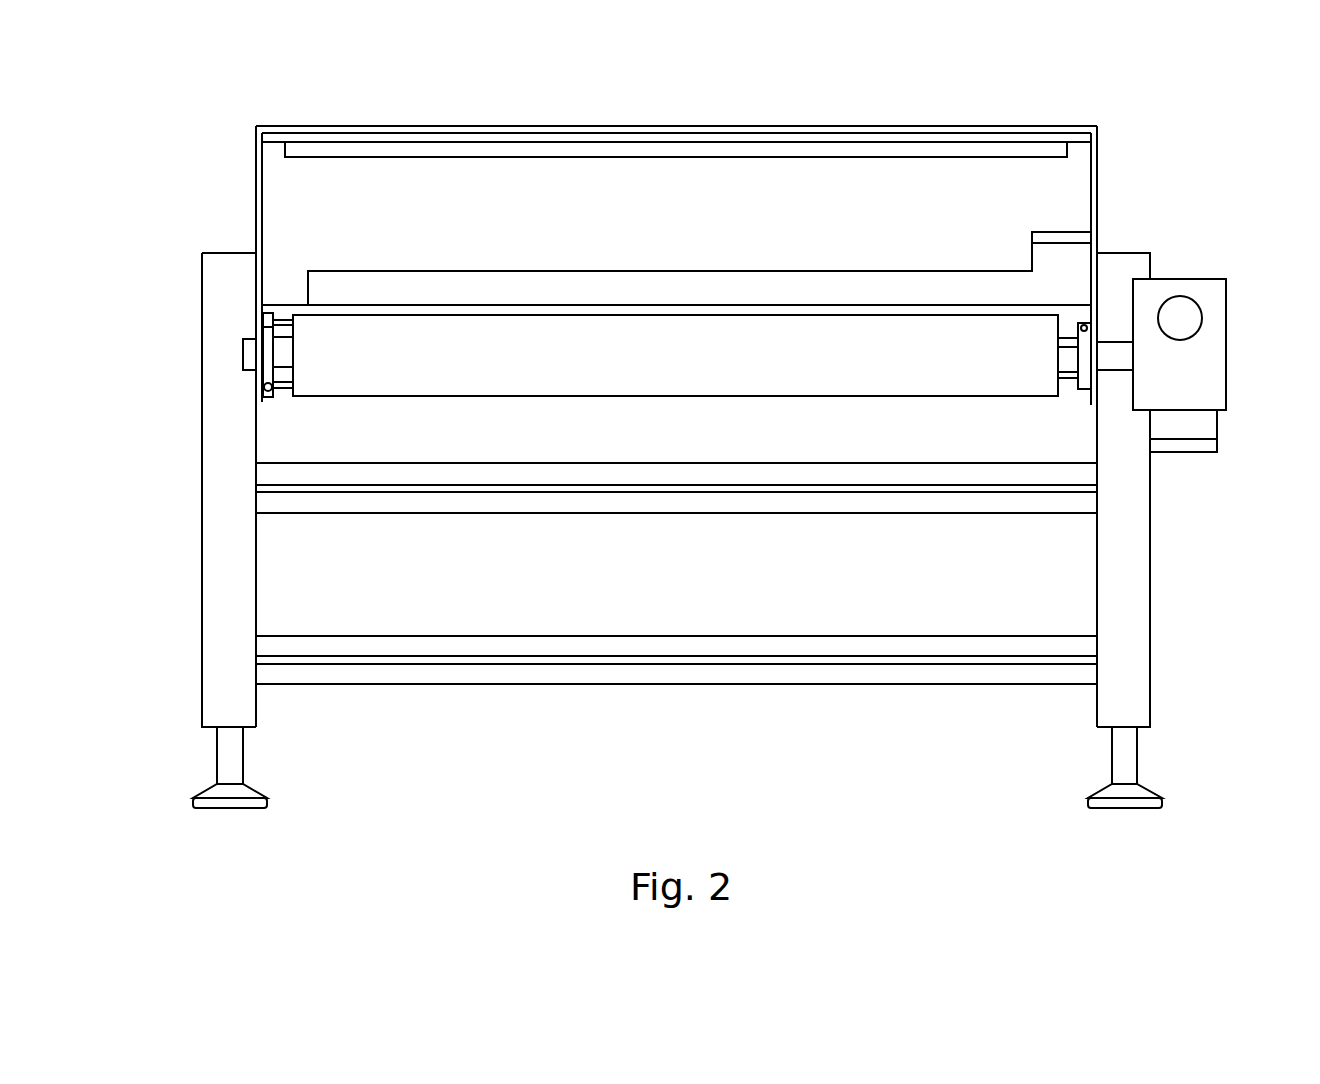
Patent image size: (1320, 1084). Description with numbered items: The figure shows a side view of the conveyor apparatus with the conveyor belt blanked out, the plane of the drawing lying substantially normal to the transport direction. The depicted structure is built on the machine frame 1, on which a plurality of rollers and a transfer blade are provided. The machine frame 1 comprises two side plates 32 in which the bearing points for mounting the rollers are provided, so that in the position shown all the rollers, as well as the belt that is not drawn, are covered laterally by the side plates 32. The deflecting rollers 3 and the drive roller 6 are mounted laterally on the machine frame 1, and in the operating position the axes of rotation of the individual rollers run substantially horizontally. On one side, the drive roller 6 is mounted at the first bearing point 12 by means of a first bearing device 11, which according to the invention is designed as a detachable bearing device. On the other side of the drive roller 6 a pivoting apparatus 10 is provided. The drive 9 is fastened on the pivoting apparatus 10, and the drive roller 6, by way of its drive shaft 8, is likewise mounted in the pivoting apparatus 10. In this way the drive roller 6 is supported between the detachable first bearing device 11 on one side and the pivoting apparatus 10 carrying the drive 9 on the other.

The machine frame 1 is at (1125, 632).
The side plates 32 is at (1097, 157).
The deflecting rollers 3 is at (352, 288).
The drive roller 6 is at (383, 363).
The first bearing device 11 is at (262, 378).
The first bearing point 12 is at (242, 355).
The drive shaft 8 is at (1107, 357).
The pivoting apparatus 10 is at (1092, 378).
The drive 9 is at (1182, 370).